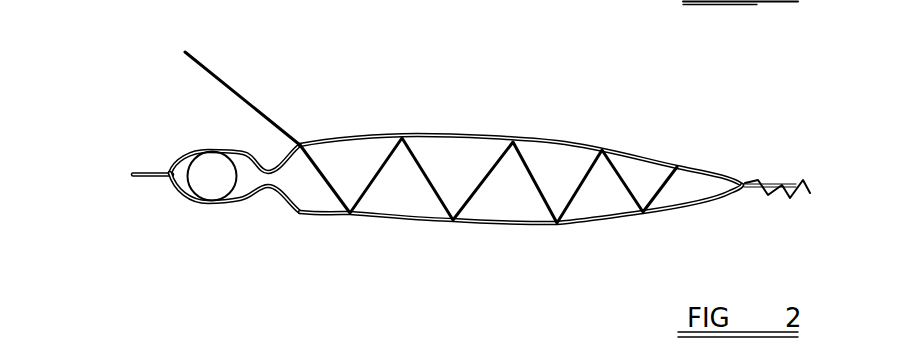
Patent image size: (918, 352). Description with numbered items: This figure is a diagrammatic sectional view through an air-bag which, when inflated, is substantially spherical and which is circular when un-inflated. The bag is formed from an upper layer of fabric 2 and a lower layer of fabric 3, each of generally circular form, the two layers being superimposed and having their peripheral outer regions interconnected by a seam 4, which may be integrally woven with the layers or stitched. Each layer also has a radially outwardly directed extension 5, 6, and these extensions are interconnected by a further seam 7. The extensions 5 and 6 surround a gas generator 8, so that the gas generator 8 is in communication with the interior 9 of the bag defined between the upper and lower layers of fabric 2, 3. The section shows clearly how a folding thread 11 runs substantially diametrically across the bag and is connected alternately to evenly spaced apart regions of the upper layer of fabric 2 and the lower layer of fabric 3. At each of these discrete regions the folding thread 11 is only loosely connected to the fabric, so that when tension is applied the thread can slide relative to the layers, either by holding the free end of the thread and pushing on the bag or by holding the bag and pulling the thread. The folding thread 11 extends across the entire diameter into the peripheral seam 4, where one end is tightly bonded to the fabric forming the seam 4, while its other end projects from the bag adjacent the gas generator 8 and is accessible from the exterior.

The upper layer of fabric 2 is at (637, 151).
The lower layer of fabric 3 is at (682, 214).
The seam 4 is at (777, 182).
The extension 5 is at (226, 147).
The extension 6 is at (241, 204).
The further seam 7 is at (135, 178).
The gas generator 8 is at (190, 208).
The interior 9 is at (458, 167).
The folding thread 11 is at (245, 95).